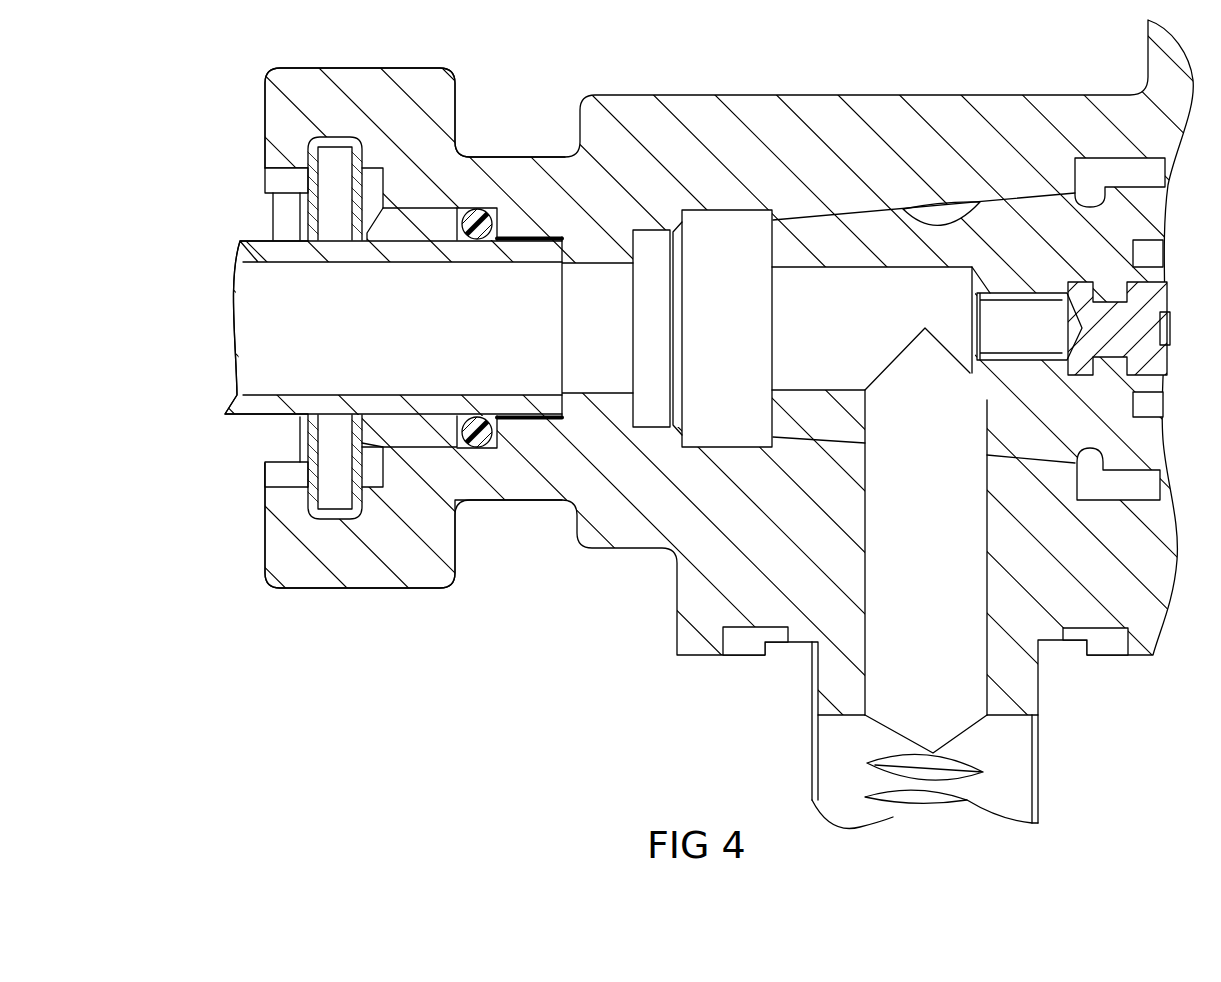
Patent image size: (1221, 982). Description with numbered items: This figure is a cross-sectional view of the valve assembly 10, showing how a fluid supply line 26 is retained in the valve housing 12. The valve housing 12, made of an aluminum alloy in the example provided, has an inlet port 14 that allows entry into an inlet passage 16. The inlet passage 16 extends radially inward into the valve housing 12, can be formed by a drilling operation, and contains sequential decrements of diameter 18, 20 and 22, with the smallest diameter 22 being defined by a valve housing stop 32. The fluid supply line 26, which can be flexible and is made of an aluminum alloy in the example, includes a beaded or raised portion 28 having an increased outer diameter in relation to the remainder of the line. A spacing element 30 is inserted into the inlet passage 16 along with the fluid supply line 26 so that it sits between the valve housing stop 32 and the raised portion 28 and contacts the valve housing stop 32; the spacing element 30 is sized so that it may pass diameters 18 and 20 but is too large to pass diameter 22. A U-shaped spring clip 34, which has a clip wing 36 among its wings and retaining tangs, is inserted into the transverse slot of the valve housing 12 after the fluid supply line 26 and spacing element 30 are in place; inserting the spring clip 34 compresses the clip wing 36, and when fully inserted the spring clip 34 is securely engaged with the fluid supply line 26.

The valve assembly 10 is at (193, 158).
The valve housing 12 is at (367, 592).
The inlet port 14 is at (378, 482).
The inlet passage 16 is at (363, 457).
The diameter 18 is at (373, 167).
The diameter 20 is at (411, 207).
The diameter 22 is at (513, 237).
The fluid supply line 26 is at (238, 416).
The raised portion 28 is at (366, 455).
The spacing element 30 is at (486, 449).
The valve housing stop 32 is at (491, 212).
The spring clip 34 is at (312, 208).
The clip wing 36 is at (282, 225).